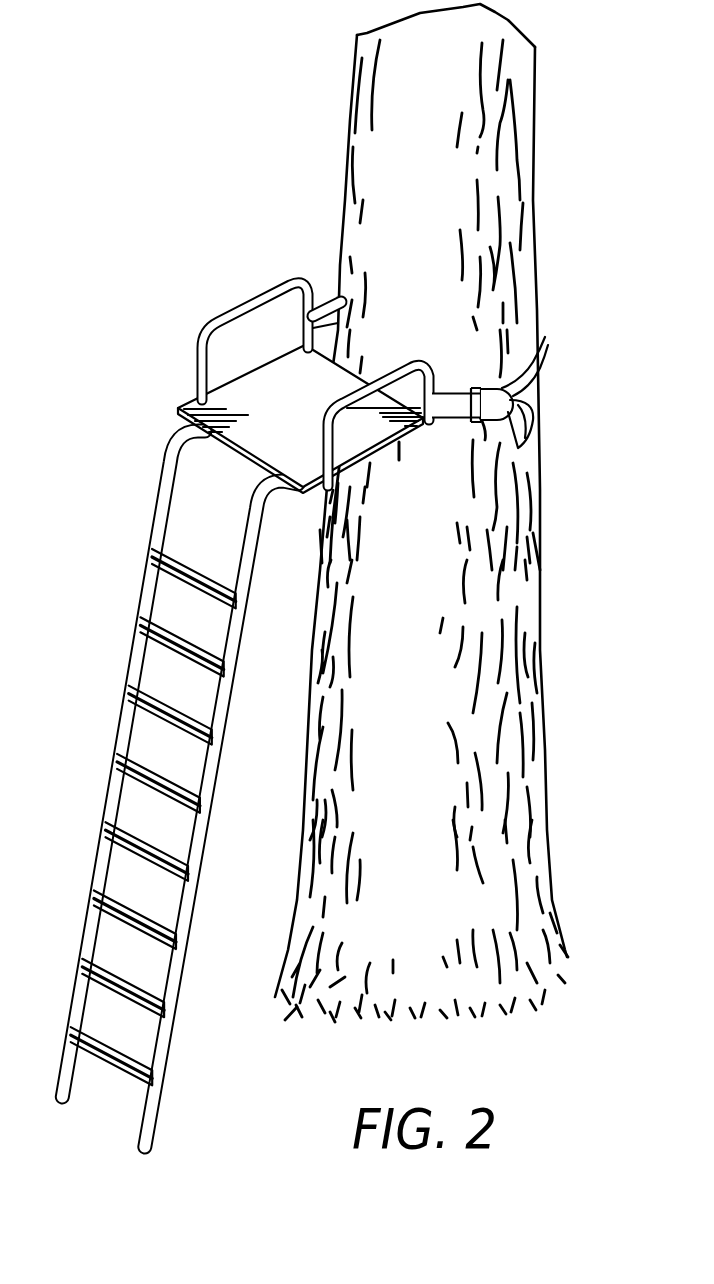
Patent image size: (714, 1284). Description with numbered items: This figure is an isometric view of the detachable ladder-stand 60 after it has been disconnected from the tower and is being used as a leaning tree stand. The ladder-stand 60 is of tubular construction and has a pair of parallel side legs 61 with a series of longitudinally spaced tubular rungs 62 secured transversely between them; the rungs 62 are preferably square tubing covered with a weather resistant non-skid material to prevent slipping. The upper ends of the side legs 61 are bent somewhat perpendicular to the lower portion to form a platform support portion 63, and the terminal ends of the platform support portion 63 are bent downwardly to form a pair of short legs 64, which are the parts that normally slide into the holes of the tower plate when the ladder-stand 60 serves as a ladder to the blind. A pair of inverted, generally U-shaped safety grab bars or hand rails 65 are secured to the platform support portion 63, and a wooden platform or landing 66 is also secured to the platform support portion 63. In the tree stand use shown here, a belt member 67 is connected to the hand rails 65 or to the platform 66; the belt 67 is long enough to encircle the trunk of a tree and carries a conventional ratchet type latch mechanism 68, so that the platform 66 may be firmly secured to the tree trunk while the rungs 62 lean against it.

The ladder-stand 60 is at (309, 703).
The side legs 61 is at (118, 733).
The rungs 62 is at (172, 630).
The platform support portion 63 is at (203, 433).
The short legs 64 is at (399, 458).
The hand rails 65 is at (271, 294).
The platform 66 is at (298, 441).
The belt member 67 is at (538, 368).
The ratchet type latch mechanism 68 is at (486, 386).